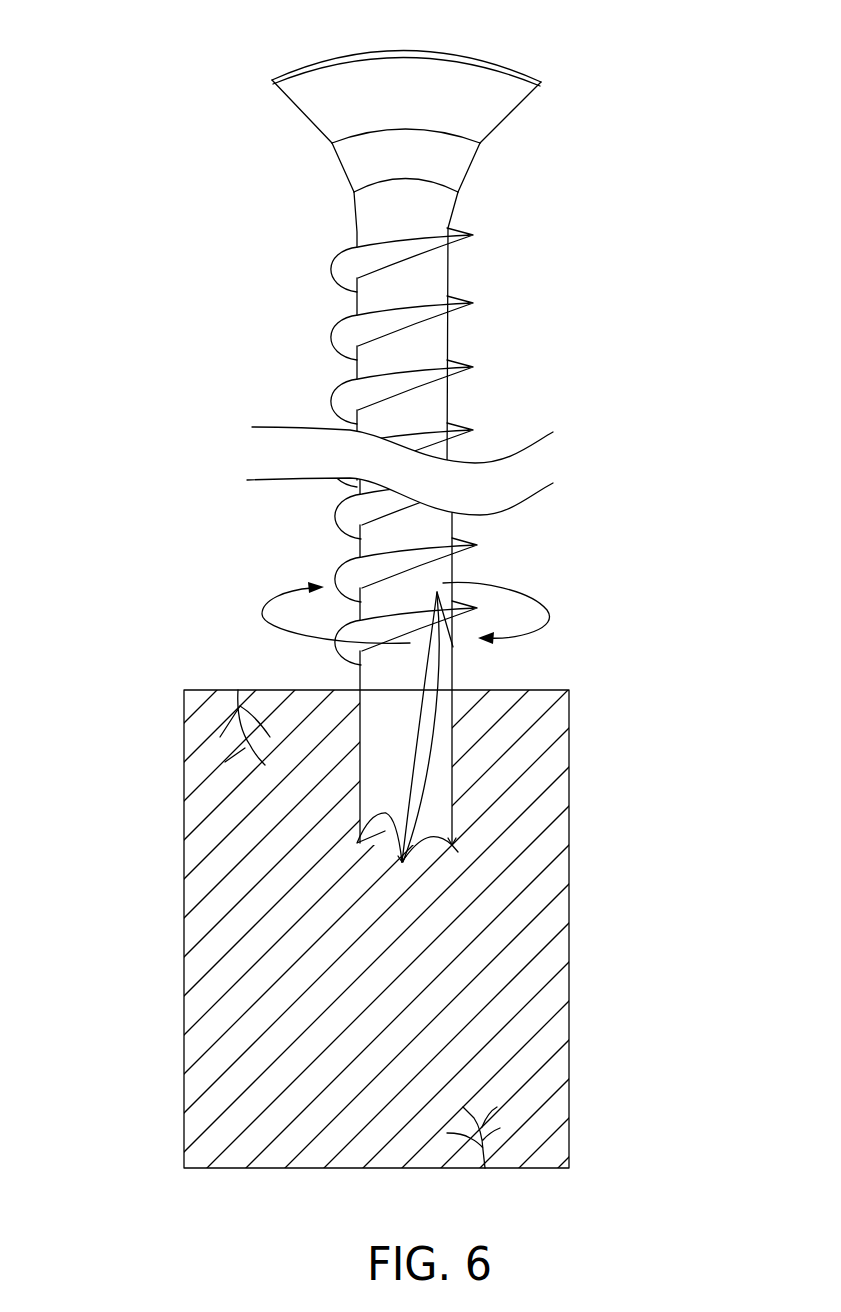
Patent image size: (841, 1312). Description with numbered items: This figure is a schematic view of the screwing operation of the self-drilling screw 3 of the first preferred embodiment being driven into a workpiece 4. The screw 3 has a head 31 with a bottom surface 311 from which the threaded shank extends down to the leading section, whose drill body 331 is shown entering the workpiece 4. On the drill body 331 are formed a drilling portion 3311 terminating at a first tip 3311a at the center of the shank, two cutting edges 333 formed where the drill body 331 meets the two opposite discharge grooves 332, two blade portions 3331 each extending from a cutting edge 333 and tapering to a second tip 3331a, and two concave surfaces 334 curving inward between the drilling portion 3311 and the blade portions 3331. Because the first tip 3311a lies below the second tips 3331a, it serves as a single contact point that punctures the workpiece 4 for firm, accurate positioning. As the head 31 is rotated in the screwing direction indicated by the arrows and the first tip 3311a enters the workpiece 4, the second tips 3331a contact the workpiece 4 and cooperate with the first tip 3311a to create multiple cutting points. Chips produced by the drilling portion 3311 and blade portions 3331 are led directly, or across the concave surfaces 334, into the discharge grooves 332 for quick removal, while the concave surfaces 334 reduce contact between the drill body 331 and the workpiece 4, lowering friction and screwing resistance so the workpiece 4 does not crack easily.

The self-drilling screw 3 is at (123, 146).
The head 31 is at (451, 99).
The bottom surface 311 is at (501, 108).
The drill body 331 is at (372, 742).
The discharge groove 332 is at (378, 772).
The cutting edge 333 is at (452, 770).
The concave surface 334 is at (375, 828).
The drilling portion 3311 is at (380, 859).
The first tip 3311a is at (400, 866).
The blade portion 3331 is at (466, 837).
The second tip 3331a is at (455, 845).
The workpiece 4 is at (200, 724).